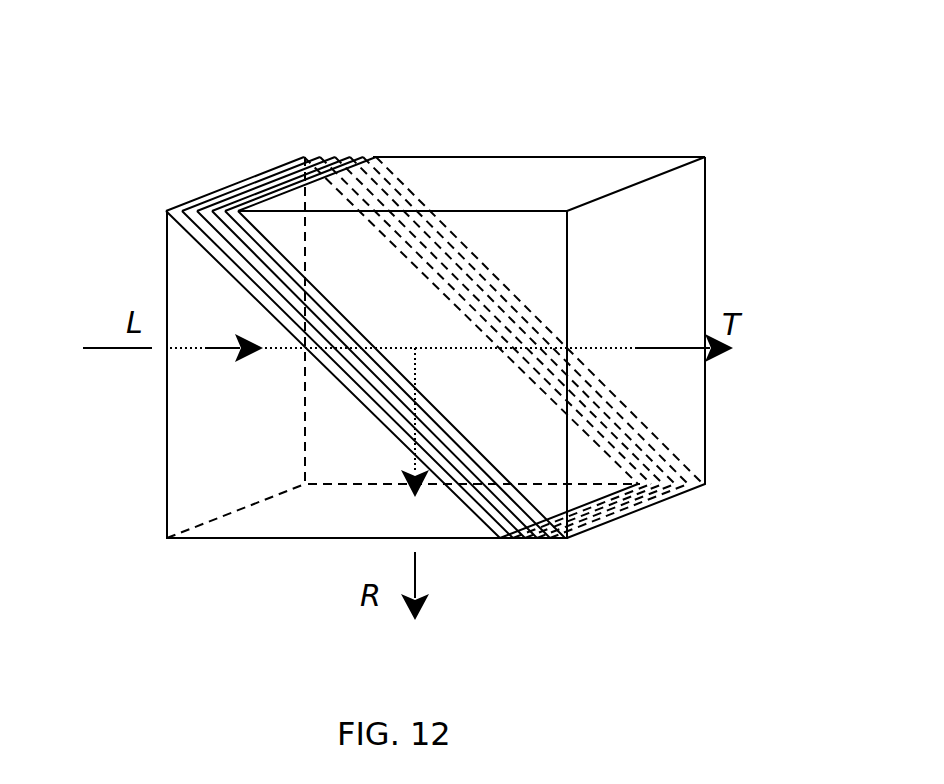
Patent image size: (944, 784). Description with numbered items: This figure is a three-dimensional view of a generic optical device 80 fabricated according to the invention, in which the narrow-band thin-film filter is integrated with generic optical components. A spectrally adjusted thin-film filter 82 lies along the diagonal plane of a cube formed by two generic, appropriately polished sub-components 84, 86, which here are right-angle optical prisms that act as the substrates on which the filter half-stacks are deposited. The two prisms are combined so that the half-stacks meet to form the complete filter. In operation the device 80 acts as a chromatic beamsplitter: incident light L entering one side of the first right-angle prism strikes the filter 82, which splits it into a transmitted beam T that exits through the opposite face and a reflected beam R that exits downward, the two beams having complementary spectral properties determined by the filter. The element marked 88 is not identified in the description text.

The generic optical device 80 is at (672, 126).
The thin-film filter 82 is at (252, 179).
The sub-component 84 is at (220, 539).
The sub-component 86 is at (706, 193).
The back surface 88 is at (208, 442).